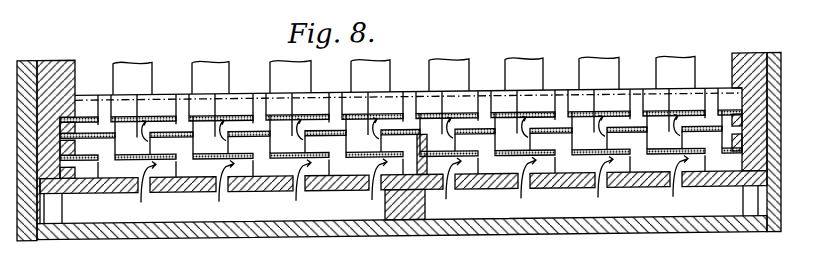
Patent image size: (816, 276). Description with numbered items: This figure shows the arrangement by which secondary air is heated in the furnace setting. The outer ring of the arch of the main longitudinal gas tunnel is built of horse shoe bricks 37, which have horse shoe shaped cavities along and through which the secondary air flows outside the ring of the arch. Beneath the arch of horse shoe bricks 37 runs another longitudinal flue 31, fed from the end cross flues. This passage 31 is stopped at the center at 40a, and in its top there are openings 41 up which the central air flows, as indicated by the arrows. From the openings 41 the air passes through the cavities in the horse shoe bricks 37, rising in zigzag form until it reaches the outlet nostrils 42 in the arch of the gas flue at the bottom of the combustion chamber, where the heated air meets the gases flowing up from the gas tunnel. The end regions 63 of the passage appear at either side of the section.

The longitudinal flue 31 is at (220, 200).
The horse shoe bricks 37 is at (326, 194).
The stop 40a is at (418, 214).
The openings 41 is at (144, 194).
The outlet nostrils 42 is at (110, 96).
The end pockets 63 is at (57, 209).